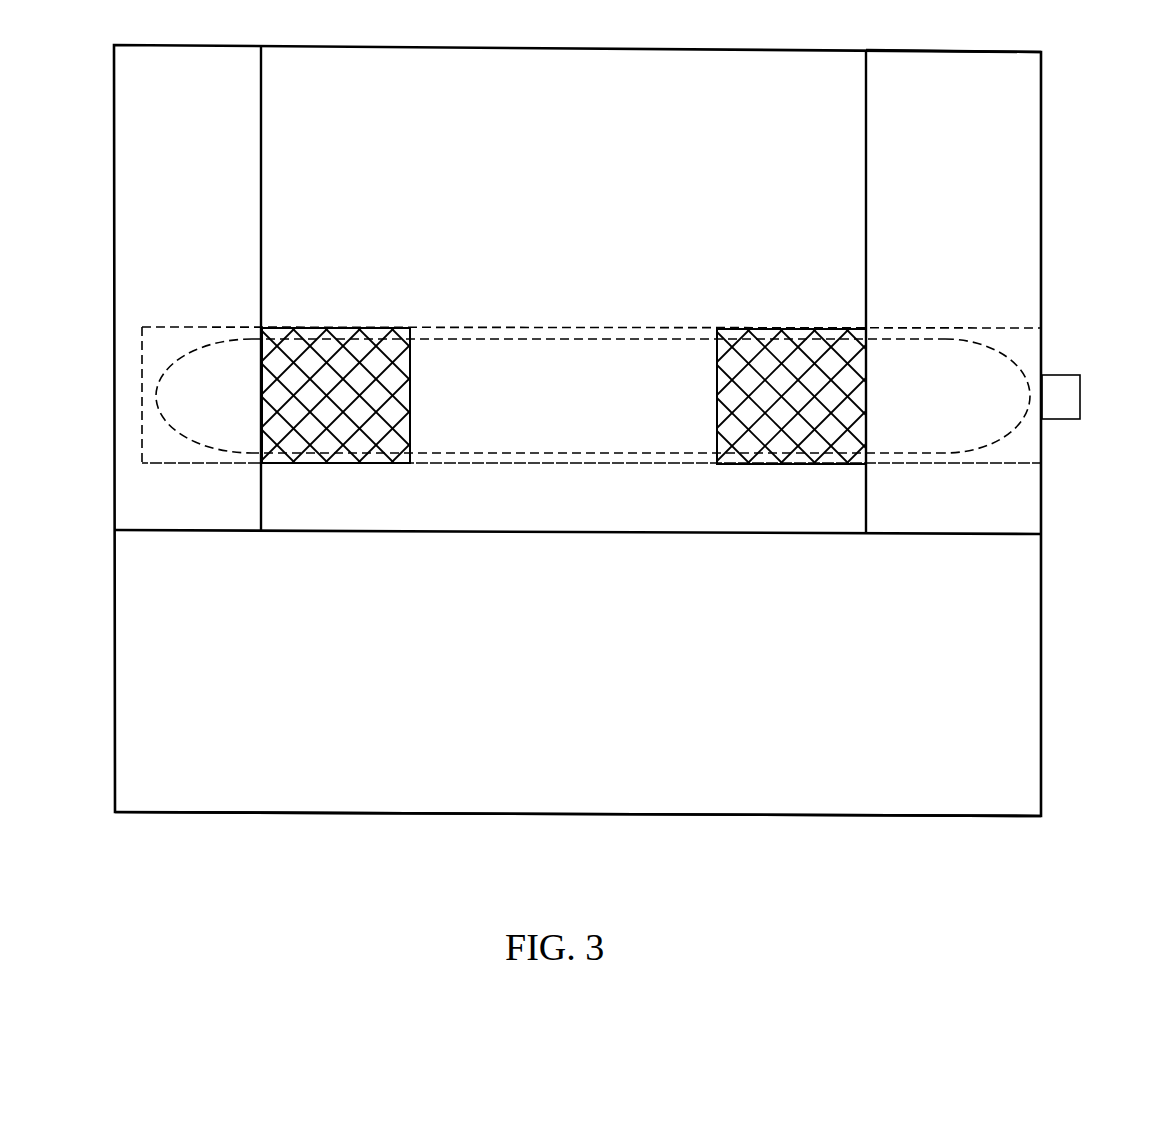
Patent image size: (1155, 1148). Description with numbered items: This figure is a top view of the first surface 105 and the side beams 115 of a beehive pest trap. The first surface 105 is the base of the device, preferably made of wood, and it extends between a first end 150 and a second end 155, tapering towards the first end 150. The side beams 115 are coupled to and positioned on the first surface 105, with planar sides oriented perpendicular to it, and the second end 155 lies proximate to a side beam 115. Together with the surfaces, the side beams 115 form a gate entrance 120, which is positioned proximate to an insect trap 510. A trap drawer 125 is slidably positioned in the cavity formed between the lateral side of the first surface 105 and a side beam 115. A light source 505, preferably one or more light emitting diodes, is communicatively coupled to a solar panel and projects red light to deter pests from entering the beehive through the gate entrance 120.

The first surface 105 is at (594, 660).
The side beams 115 is at (218, 193).
The gate entrance 120 is at (587, 513).
The trap drawer 125 is at (200, 327).
The first end 150 is at (1063, 820).
The second end 155 is at (1066, 48).
The light source 505 is at (808, 328).
The insect trap 510 is at (568, 328).